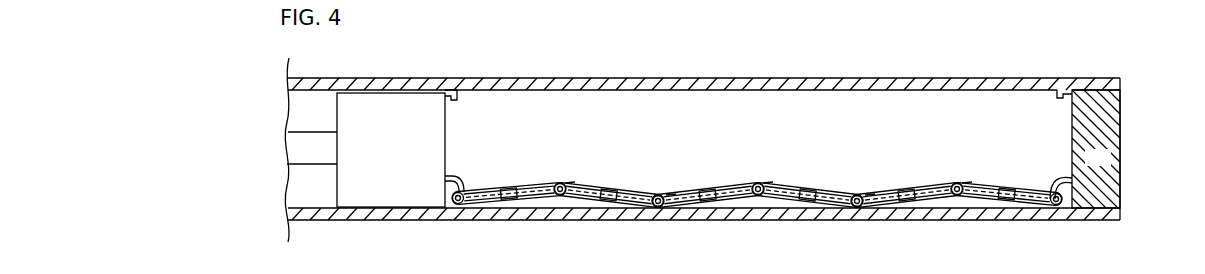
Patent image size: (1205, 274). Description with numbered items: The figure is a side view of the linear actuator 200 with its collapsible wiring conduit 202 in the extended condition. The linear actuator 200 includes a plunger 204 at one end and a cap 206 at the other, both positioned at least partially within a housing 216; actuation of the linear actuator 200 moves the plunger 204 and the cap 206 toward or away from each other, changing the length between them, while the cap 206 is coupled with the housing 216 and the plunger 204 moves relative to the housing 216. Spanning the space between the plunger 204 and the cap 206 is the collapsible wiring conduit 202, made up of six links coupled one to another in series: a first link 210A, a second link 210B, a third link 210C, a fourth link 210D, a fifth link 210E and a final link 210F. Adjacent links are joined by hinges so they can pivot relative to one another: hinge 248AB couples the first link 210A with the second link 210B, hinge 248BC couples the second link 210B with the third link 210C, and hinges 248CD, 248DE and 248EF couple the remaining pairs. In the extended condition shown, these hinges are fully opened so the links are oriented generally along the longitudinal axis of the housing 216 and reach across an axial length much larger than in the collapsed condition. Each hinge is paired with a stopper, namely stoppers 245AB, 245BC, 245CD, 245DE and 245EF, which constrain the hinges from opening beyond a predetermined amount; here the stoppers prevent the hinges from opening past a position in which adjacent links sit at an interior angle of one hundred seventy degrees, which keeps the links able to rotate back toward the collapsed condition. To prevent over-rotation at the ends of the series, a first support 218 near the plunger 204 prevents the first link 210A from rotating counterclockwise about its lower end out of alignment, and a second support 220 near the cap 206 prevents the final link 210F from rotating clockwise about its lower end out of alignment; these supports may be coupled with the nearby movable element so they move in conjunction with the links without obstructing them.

The linear actuator 200 is at (728, 58).
The collapsible wiring conduit 202 is at (704, 236).
The plunger 204 is at (367, 97).
The cap 206 is at (1108, 164).
The first link 210A is at (487, 204).
The second link 210B is at (630, 206).
The third link 210C is at (702, 206).
The fourth link 210D is at (803, 206).
The fifth link 210E is at (903, 206).
The final link 210F is at (1003, 206).
The housing 216 is at (858, 216).
The first support 218 is at (443, 98).
The second support 220 is at (1072, 90).
The stopper 245AB is at (570, 181).
The stopper 245BC is at (673, 190).
The stopper 245CD is at (770, 181).
The stopper 245DE is at (873, 190).
The stopper 245EF is at (970, 181).
The hinge 248AB is at (563, 181).
The hinge 248BC is at (663, 192).
The hinge 248CD is at (763, 181).
The hinge 248DE is at (863, 192).
The hinge 248EF is at (962, 181).